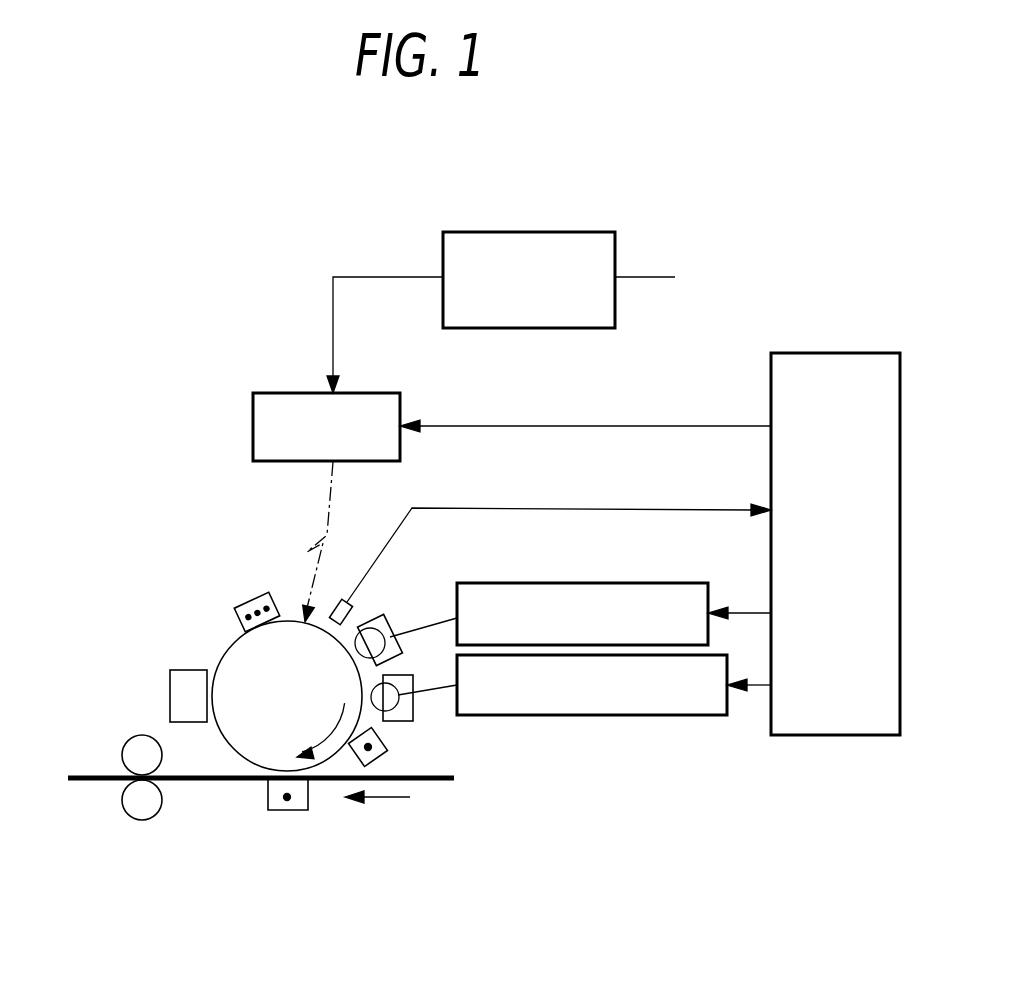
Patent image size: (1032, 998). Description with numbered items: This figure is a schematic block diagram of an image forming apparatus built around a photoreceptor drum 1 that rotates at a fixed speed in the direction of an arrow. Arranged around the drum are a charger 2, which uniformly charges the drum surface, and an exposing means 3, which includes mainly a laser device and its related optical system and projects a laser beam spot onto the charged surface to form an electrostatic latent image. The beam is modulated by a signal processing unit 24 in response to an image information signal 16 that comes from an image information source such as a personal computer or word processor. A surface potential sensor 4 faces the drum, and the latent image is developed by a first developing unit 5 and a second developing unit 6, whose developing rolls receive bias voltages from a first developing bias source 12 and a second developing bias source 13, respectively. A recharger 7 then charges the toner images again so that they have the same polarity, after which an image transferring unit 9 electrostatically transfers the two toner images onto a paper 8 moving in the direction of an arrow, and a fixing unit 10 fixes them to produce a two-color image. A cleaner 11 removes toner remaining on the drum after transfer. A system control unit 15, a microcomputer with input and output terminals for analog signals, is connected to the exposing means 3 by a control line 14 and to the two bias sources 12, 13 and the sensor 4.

The photoreceptor drum 1 is at (228, 652).
The charger 2 is at (246, 598).
The exposing means 3 is at (372, 393).
The surface potential sensor 4 is at (340, 598).
The first developing unit 5 is at (378, 618).
The second developing unit 6 is at (416, 712).
The recharger 7 is at (385, 746).
The paper 8 is at (436, 780).
The image transferring unit 9 is at (287, 812).
The fixing unit 10 is at (143, 820).
The cleaner 11 is at (170, 690).
The first developing bias source 12 is at (664, 583).
The second developing bias source 13 is at (727, 672).
The control signal line 14 is at (508, 426).
The system control unit 15 is at (771, 381).
The image information signal 16 is at (644, 277).
The signal processing unit 24 is at (584, 232).